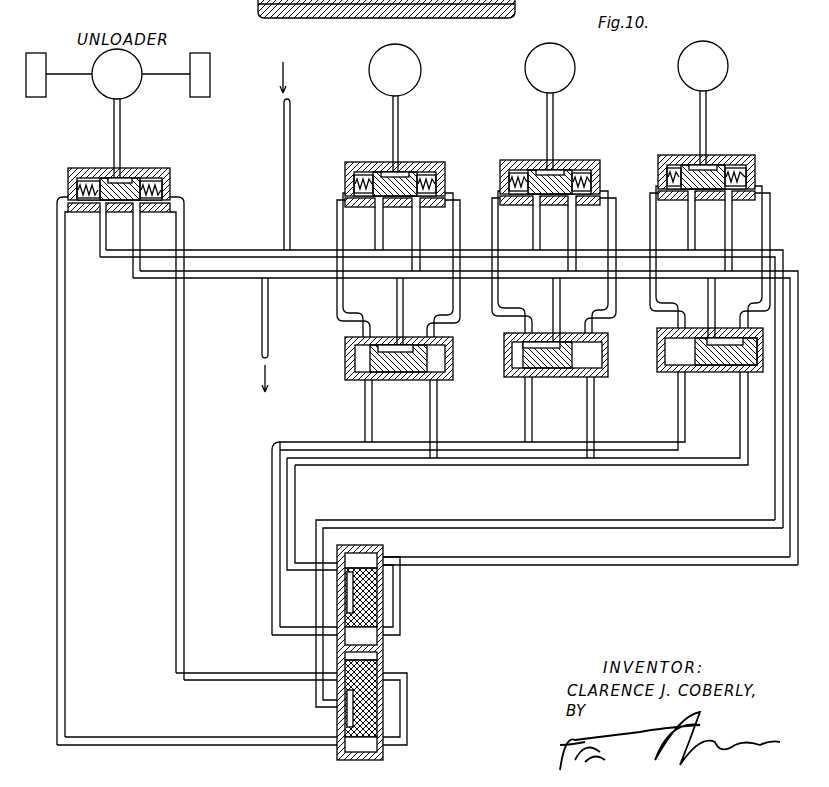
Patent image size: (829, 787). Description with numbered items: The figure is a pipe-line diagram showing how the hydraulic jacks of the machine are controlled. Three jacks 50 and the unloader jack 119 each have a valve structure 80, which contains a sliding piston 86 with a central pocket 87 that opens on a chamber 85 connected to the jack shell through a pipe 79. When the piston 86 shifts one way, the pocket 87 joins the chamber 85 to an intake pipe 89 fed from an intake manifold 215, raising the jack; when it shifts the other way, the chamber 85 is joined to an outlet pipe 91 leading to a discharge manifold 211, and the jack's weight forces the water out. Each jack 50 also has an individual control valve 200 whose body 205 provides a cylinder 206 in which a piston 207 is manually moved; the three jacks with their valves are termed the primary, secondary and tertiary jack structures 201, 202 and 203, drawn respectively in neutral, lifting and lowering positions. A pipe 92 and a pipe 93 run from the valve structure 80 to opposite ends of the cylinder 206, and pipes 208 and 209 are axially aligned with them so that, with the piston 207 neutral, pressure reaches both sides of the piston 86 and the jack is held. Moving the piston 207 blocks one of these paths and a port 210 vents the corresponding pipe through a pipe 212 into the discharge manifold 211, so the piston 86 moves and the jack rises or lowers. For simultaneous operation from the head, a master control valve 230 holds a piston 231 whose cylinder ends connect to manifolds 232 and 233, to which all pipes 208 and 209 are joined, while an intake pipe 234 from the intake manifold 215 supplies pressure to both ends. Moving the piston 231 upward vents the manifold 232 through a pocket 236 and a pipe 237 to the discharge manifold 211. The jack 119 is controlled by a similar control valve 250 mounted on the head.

The jack 50 is at (422, 78).
The pipe 79 is at (553, 103).
The valve structure 80 is at (176, 173).
The chamber 85 is at (428, 2).
The piston 86 is at (110, 178).
The pocket 87 is at (125, 180).
The intake pipe 89 is at (100, 250).
The outlet pipe 91 is at (140, 237).
The pipe 92 is at (184, 237).
The pipe 93 is at (57, 237).
The jack 119 is at (137, 97).
The individual control valve 200 is at (346, 360).
The primary jack structure 201 is at (413, 140).
The secondary jack structure 202 is at (568, 140).
The tertiary jack structure 203 is at (720, 136).
The body 205 is at (452, 376).
The cylinder 206 is at (437, 353).
The piston 207 is at (382, 380).
The pipe 208 is at (437, 427).
The pipe 209 is at (365, 430).
The port 210 is at (408, 345).
The discharge manifold 211 is at (262, 308).
The pipe 212 is at (397, 296).
The intake manifold 215 is at (290, 123).
The master control valve 230 is at (382, 608).
The piston 231 is at (385, 568).
The manifold 232 is at (295, 503).
The manifold 233 is at (272, 537).
The intake pipe 234 is at (505, 562).
The pocket 236 is at (347, 596).
The pipe 237 is at (316, 633).
The control valve 250 is at (378, 705).